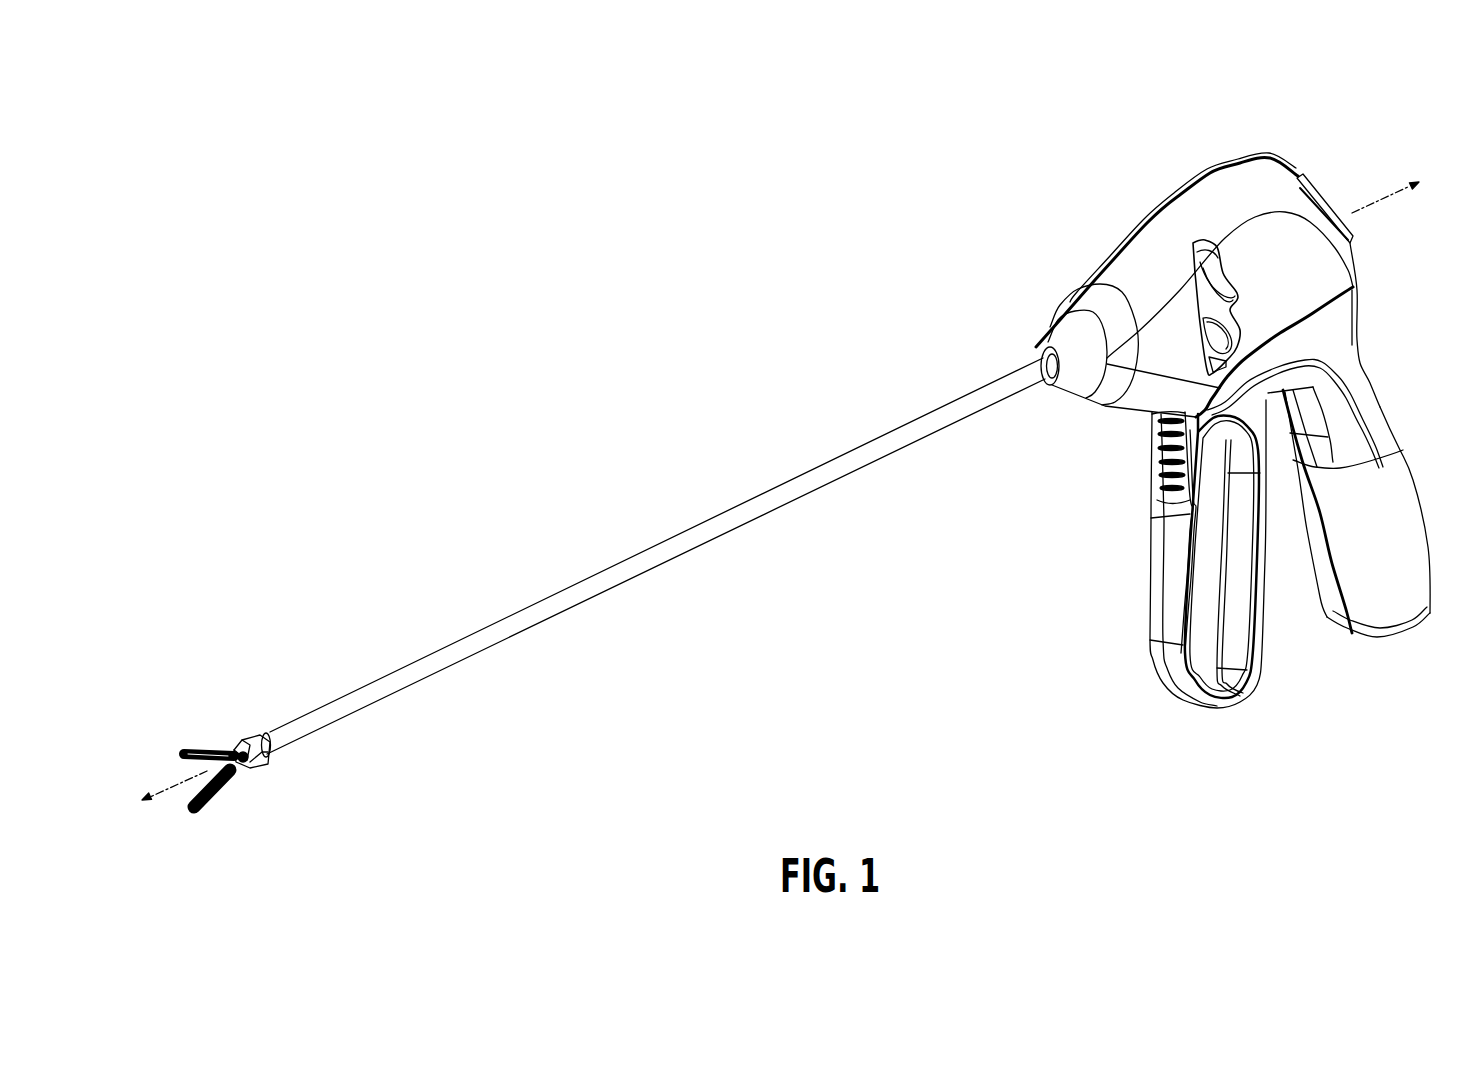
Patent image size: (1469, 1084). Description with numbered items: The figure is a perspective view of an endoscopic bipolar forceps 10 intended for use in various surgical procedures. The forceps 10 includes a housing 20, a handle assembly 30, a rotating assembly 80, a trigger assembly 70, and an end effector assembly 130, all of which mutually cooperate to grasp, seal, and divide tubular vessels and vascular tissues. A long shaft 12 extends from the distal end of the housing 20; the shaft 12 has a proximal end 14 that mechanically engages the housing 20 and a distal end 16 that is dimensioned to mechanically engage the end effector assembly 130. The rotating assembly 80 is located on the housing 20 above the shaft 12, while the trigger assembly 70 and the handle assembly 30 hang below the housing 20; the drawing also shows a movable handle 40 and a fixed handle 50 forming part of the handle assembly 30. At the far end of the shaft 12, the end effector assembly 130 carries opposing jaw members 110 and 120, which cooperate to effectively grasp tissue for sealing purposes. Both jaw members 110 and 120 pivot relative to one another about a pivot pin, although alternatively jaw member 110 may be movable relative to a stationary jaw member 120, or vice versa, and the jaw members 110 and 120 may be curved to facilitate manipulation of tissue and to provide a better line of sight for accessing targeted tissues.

The forceps 10 is at (526, 434).
The shaft 12 is at (580, 562).
The proximal end 14 is at (1028, 368).
The distal end 16 is at (296, 717).
The housing 20 is at (1221, 152).
The handle assembly 30 is at (1167, 712).
The movable handle 40 is at (1160, 585).
The fixed handle 50 is at (1400, 494).
The trigger assembly 70 is at (1160, 450).
The rotating assembly 80 is at (1207, 262).
The jaw member 110 is at (187, 748).
The jaw member 120 is at (217, 798).
The end effector assembly 130 is at (223, 728).